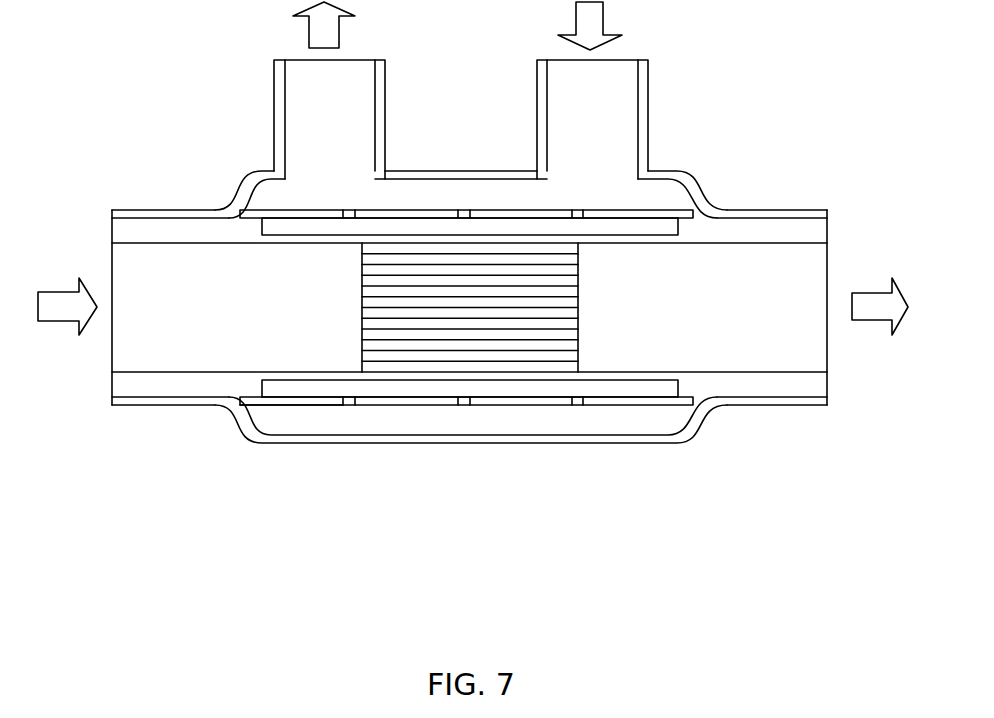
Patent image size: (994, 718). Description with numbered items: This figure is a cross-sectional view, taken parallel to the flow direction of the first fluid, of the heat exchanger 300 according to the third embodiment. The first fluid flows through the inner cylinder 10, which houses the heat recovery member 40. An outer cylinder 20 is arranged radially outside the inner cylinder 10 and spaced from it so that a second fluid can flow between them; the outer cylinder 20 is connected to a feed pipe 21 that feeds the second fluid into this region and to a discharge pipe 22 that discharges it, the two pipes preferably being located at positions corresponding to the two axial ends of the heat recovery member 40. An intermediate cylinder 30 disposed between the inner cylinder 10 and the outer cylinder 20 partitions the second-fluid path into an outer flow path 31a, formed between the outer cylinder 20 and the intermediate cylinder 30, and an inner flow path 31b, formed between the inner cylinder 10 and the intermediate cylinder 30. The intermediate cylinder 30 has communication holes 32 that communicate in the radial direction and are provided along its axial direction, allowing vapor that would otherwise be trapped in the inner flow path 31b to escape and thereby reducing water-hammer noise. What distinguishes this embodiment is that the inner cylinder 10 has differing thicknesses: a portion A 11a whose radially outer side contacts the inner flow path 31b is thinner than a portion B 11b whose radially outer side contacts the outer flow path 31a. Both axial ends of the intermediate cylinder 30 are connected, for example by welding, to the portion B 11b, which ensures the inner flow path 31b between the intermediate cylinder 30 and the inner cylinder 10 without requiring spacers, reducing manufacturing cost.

The heat exchanger 300 is at (484, 637).
The inner cylinder 10 is at (803, 512).
The portion A 11a is at (625, 378).
The portion B 11b is at (710, 383).
The outer cylinder 20 is at (243, 188).
The feed pipe 21 is at (643, 108).
The discharge pipe 22 is at (277, 115).
The intermediate cylinder 30 is at (498, 402).
The outer flow path 31a is at (318, 420).
The inner flow path 31b is at (390, 388).
The communication holes 32 is at (573, 402).
The heat recovery member 40 is at (563, 292).